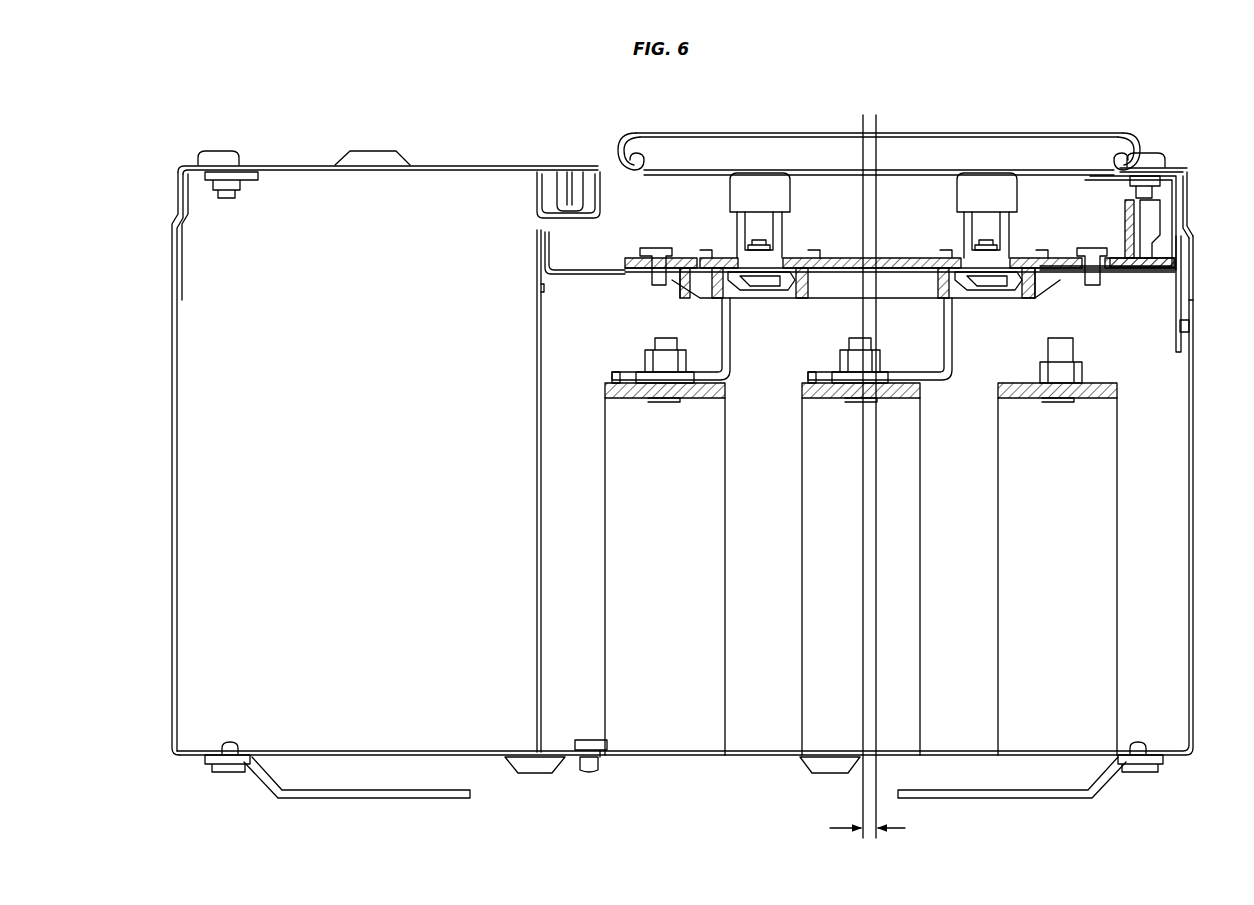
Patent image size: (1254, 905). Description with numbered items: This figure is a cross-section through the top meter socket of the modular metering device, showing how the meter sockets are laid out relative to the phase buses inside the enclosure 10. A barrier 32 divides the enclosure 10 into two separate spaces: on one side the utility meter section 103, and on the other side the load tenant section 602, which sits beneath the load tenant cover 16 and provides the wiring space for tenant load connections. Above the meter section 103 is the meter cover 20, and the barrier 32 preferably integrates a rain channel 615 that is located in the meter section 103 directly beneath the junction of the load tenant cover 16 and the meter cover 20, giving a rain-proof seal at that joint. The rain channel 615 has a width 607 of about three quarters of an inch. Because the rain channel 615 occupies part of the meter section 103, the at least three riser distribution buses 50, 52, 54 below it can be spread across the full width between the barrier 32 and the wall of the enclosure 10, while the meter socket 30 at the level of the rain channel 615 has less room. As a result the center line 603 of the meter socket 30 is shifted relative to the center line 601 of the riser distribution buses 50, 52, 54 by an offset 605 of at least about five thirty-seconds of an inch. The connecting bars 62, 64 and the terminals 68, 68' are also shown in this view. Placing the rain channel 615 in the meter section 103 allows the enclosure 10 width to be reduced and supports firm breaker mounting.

The enclosure 10 is at (172, 452).
The load tenant cover 16 is at (283, 166).
The meter cover 20 is at (1075, 133).
The meter socket 30 is at (903, 258).
The barrier 32 is at (537, 340).
The riser distribution bus 50 is at (1020, 398).
The riser distribution bus 52 is at (901, 398).
The riser distribution bus 54 is at (703, 398).
The bus bar 62 is at (955, 341).
The bus bar 64 is at (731, 341).
The terminal 68 is at (987, 176).
The terminal 68' is at (760, 176).
The meter section 103 is at (683, 500).
The center line of riser distribution bus 601 is at (863, 648).
The load tenant section 602 is at (355, 472).
The center line of meter socket 603 is at (876, 554).
The offset 605 is at (898, 828).
The width of rain channel 607 is at (598, 164).
The rain channel 615 is at (572, 220).